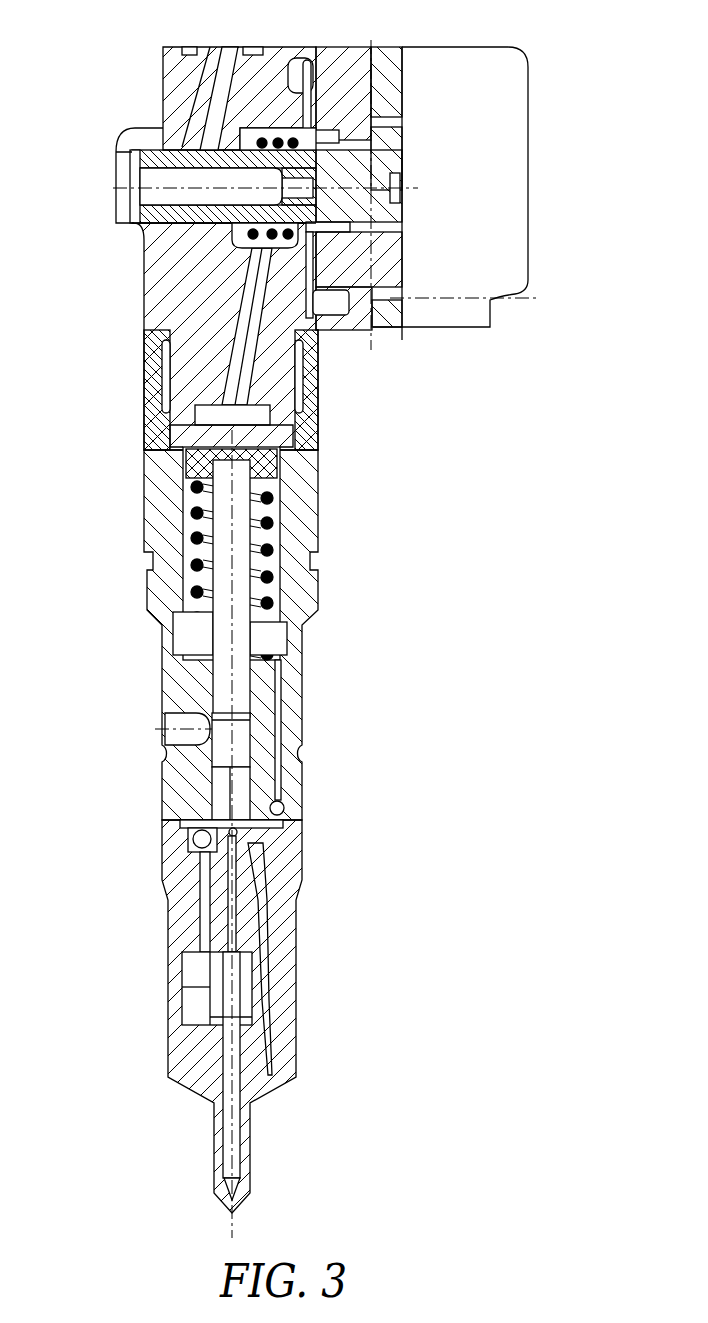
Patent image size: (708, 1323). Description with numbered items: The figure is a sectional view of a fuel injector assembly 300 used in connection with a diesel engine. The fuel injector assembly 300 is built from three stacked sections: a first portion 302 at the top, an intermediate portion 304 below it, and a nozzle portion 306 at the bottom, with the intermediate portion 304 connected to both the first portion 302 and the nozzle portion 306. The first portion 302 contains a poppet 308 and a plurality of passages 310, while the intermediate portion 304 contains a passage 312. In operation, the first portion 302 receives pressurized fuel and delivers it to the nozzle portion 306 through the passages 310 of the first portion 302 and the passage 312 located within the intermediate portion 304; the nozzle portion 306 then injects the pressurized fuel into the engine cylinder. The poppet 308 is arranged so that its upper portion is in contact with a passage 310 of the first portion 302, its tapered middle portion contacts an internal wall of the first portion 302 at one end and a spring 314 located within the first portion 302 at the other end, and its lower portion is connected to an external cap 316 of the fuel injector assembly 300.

The fuel injector assembly 300 is at (578, 64).
The first portion 302 is at (183, 288).
The intermediate portion 304 is at (180, 687).
The nozzle portion 306 is at (177, 962).
The poppet 308 is at (155, 173).
The passages 310 is at (218, 88).
The passage 312 is at (287, 733).
The spring 314 is at (235, 140).
The external cap 316 is at (502, 182).